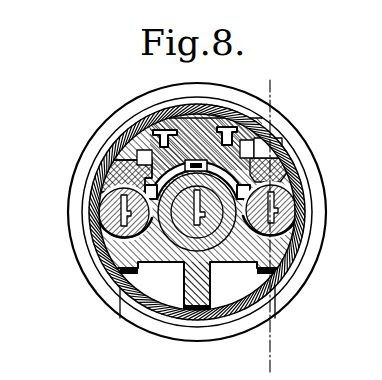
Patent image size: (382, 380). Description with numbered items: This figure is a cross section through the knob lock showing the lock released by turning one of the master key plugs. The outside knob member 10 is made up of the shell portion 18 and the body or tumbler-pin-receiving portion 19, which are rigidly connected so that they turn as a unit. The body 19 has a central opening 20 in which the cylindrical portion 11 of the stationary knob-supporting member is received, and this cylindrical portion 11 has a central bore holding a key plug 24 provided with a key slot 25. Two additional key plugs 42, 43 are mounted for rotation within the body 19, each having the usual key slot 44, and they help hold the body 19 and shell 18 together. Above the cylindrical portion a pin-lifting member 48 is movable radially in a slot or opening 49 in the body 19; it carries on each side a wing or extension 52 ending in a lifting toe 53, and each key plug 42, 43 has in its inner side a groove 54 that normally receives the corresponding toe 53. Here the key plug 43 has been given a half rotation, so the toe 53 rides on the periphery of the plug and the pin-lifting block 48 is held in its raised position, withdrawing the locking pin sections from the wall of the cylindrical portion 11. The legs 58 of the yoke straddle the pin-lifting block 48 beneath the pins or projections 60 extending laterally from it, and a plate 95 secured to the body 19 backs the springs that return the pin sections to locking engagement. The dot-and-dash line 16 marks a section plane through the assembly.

The outside knob member 10 is at (318, 258).
The cylindrical portion of the knob-supporting member 11 is at (153, 256).
The section line 16 is at (277, 218).
The shell portion 18 is at (284, 287).
The body or tumbler-pin-receiving portion 19 is at (245, 250).
The central opening 20 is at (197, 233).
The key plug 24 is at (186, 228).
The key slot 25 is at (212, 236).
The key plug 42 is at (104, 222).
The key plug 43 is at (299, 196).
The key slot 44 is at (124, 201).
The pin-lifting member 48 is at (219, 126).
The slot or opening 49 is at (278, 150).
The wing or extension 52 is at (122, 155).
The lifting toe 53 is at (112, 168).
The groove 54 is at (118, 268).
The legs of the yoke 58 is at (146, 158).
The pins or projections 60 is at (165, 140).
The plate 95 is at (205, 106).